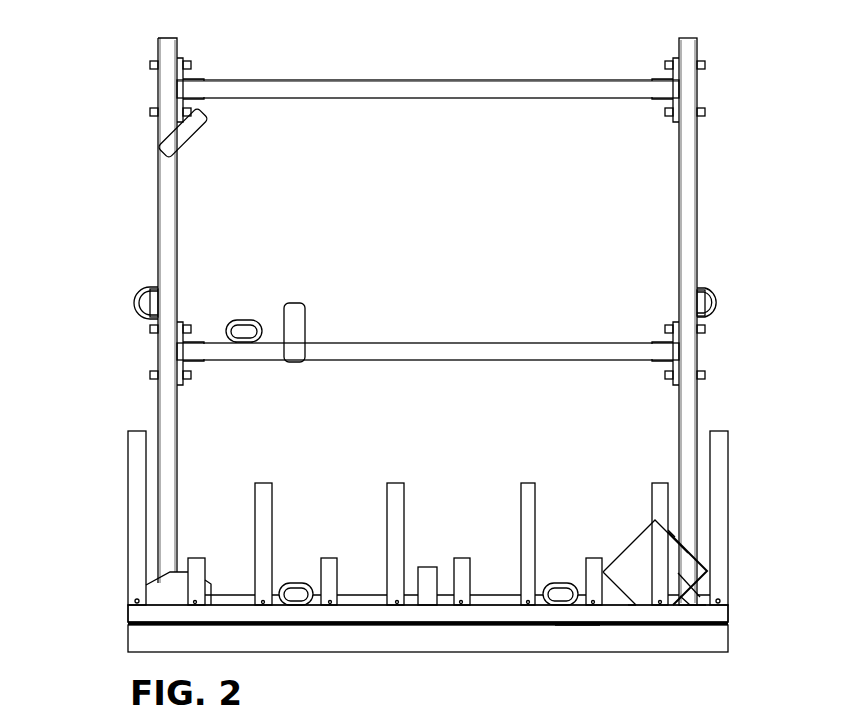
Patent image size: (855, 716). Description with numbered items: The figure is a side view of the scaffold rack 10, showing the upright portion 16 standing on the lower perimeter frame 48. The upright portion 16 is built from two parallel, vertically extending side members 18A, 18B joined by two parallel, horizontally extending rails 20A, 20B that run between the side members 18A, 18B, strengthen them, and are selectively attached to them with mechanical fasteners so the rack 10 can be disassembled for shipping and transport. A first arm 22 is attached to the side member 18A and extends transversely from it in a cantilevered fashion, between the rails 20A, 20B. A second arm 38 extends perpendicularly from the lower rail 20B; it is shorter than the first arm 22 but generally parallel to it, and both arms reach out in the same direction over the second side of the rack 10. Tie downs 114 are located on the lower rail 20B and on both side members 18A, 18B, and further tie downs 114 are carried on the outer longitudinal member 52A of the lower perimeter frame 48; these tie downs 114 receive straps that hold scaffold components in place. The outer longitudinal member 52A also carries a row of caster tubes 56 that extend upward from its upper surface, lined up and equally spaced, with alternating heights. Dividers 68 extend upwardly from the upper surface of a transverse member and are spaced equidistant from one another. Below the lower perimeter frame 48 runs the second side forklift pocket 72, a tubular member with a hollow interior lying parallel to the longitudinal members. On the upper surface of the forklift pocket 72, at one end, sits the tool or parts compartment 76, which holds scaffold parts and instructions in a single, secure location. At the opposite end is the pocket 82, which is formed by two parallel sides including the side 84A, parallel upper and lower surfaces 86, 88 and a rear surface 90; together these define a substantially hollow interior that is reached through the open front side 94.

The scaffold rack 10 is at (428, 71).
The upright portion 16 is at (536, 88).
The side member 18A is at (166, 224).
The side member 18B is at (692, 158).
The rail 20A is at (259, 84).
The rail 20B is at (455, 342).
The first arm 22 is at (178, 128).
The second arm 38 is at (296, 303).
The lower perimeter frame 48 is at (140, 611).
The outer longitudinal member 52A is at (571, 626).
The caster tube 56 is at (255, 516).
The divider 68 is at (428, 566).
The second side forklift pocket 72 is at (402, 640).
The tool or parts compartment 76 is at (158, 592).
The pocket 82 is at (690, 556).
The side 84A is at (678, 573).
The upper surface 86 is at (685, 540).
The lower surface 88 is at (628, 605).
The rear surface 90 is at (700, 605).
The front side 94 is at (633, 540).
The tie down 114 is at (126, 300).